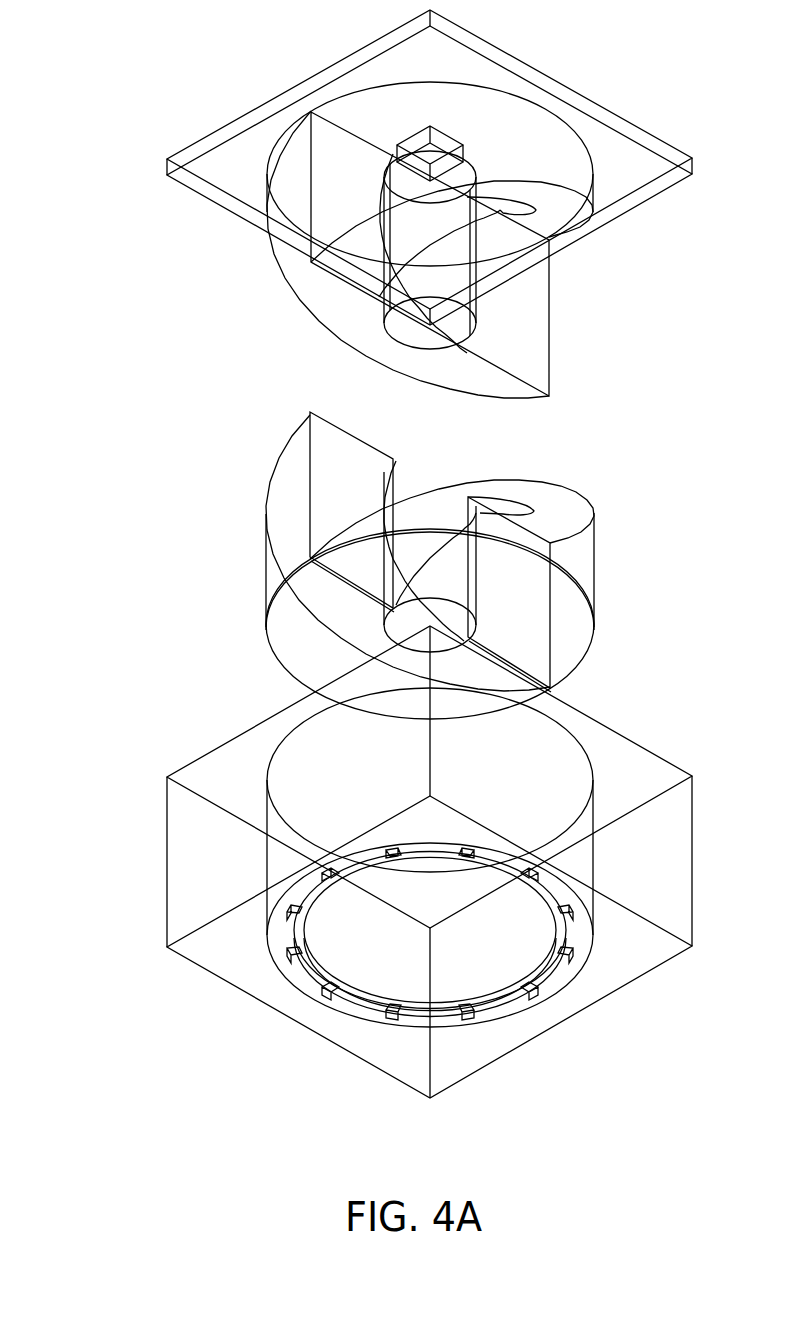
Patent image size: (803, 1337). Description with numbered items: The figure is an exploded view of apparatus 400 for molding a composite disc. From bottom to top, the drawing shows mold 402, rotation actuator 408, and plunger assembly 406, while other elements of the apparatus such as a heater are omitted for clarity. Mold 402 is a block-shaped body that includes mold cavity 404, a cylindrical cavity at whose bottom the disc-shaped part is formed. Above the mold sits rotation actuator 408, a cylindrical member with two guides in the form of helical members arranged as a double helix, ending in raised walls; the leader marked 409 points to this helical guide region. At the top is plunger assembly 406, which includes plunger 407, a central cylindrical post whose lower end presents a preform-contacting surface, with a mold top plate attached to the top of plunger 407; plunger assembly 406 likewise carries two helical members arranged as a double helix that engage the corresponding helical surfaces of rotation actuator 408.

The apparatus 400 is at (131, 362).
The mold 402 is at (188, 861).
The mold cavity 404 is at (295, 763).
The plunger assembly 406 is at (245, 273).
The plunger 407 is at (408, 227).
The rotation actuator 408 is at (246, 587).
The helical ramp surface 409 is at (418, 523).